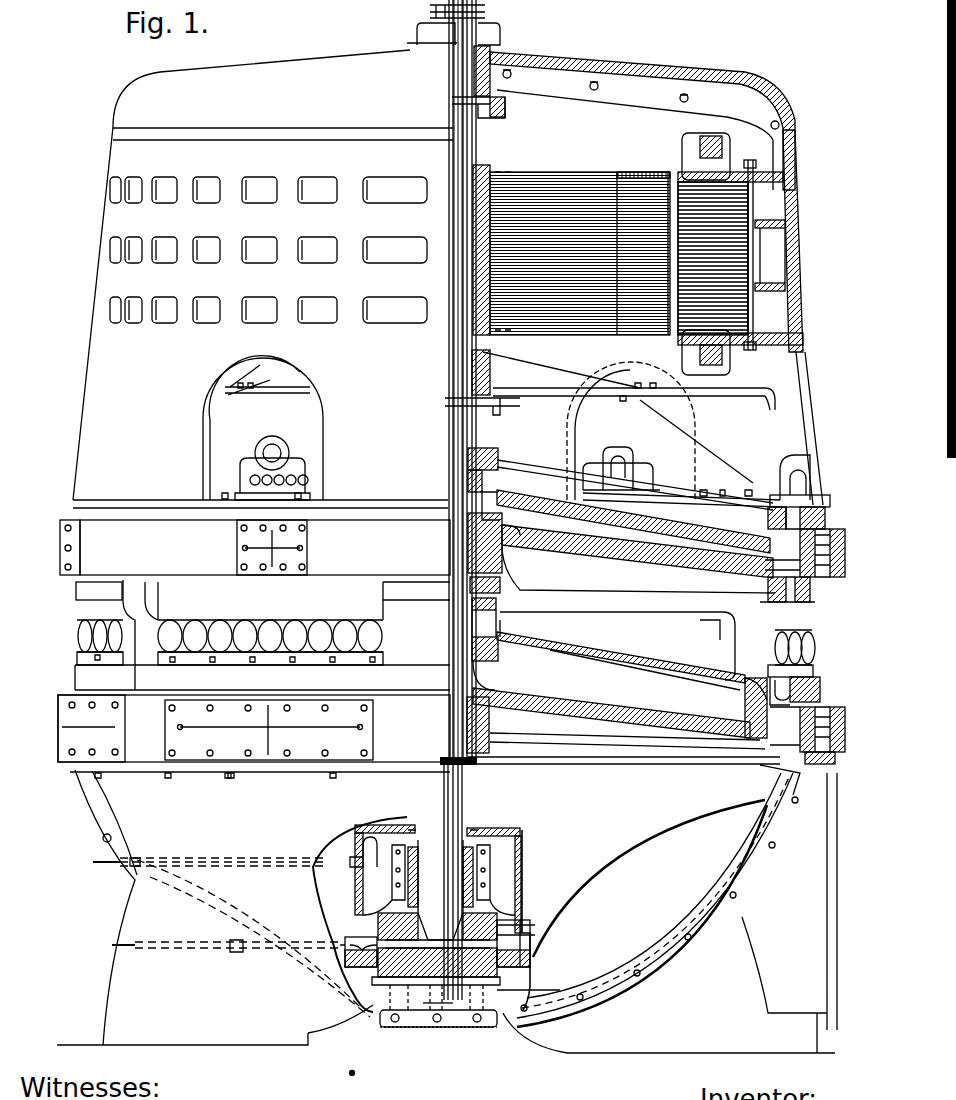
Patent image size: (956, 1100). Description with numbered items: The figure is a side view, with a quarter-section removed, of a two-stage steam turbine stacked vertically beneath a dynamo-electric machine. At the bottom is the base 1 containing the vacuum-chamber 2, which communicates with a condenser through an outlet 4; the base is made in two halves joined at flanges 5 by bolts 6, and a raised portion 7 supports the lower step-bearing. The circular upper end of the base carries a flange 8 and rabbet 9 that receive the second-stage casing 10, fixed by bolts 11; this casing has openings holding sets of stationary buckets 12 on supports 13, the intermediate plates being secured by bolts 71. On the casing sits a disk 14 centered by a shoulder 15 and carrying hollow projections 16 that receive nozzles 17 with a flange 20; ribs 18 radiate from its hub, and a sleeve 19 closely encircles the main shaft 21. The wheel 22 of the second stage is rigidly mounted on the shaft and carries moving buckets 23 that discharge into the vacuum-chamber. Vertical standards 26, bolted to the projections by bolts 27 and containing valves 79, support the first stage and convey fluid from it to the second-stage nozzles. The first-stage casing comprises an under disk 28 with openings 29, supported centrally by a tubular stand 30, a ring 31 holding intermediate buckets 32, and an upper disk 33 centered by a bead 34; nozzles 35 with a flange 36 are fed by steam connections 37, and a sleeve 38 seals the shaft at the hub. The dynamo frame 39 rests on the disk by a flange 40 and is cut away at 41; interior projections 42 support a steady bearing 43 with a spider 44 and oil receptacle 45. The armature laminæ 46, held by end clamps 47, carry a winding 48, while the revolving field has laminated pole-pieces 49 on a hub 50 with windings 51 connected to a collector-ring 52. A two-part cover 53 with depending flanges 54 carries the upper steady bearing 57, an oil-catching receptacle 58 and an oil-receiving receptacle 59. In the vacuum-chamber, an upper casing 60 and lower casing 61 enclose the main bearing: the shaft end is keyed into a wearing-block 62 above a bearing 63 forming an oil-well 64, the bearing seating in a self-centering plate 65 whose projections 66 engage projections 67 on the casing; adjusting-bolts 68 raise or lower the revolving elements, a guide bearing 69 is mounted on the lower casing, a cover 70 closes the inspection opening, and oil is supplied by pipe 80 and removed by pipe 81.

The base 1 is at (231, 867).
The vacuum-chamber 2 is at (570, 817).
The outlet 4 is at (447, 913).
The flanges 5 is at (120, 862).
The bolts 6 is at (103, 840).
The raised portion 7 is at (450, 1005).
The outwardly-extending flange 8 is at (172, 772).
The rabbet or bead 9 is at (790, 772).
The casing 10 is at (805, 805).
The bolts 11 is at (232, 775).
The stationary buckets 12 is at (816, 722).
The support 13 is at (303, 764).
The disk 14 is at (814, 688).
The shoulder 15 is at (750, 710).
The projections 16 is at (386, 680).
The nozzles 17 is at (760, 666).
The ribs 18 is at (600, 702).
The sleeve 19 is at (505, 626).
The flange 20 is at (78, 672).
The main shaft 21 is at (458, 807).
The wheel 22 is at (558, 722).
The buckets 23 is at (762, 758).
The standards 26 is at (90, 613).
The bolts 27 is at (78, 655).
The disk-like portion 28 is at (603, 547).
The openings 29 is at (812, 597).
The tubular stand 30 is at (498, 612).
The ring 31 is at (822, 517).
The intermediate buckets 32 is at (816, 548).
The disk-like structure 33 is at (600, 522).
The shoulder or bead 34 is at (762, 522).
The nozzles 35 is at (812, 500).
The flange 36 is at (313, 495).
The steam connections 37 is at (284, 450).
The sleeve 38 is at (498, 462).
The frame 39 is at (802, 352).
The flange 40 is at (218, 485).
The cut-away openings 41 is at (822, 394).
The projections 42 is at (735, 396).
The steady bearing 43 is at (492, 373).
The spider 44 is at (570, 388).
The oil-receiving receptacle 45 is at (500, 408).
The armature laminæ 46 is at (720, 215).
The end clamps 47 is at (790, 160).
The winding 48 is at (725, 158).
The laminated pole-pieces 49 is at (530, 176).
The central hub 50 is at (485, 170).
The winding 51 is at (630, 172).
The collector-ring 52 is at (478, 14).
The cover 53 is at (745, 78).
The depending flanges 54 is at (618, 100).
The steady bearing 57 is at (490, 58).
The oil-catching receptacle 58 is at (505, 112).
The oil-receiving receptacle 59 is at (436, 40).
The upper casing part 60 is at (522, 850).
The lower casing part 61 is at (340, 948).
The wearing-block 62 is at (500, 914).
The bearing 63 is at (505, 953).
The oil-well 64 is at (425, 1000).
The adjustable stationary disk or plate 65 is at (395, 1030).
The projections 66 is at (350, 955).
The projections 67 is at (345, 975).
The adjusting-bolts 68 is at (480, 1030).
The steady or guide bearing 69 is at (345, 858).
The cover 70 is at (540, 987).
The bolts 71 is at (285, 760).
The valves 79 is at (162, 630).
The pipe 80 is at (115, 945).
The pipe 81 is at (95, 866).